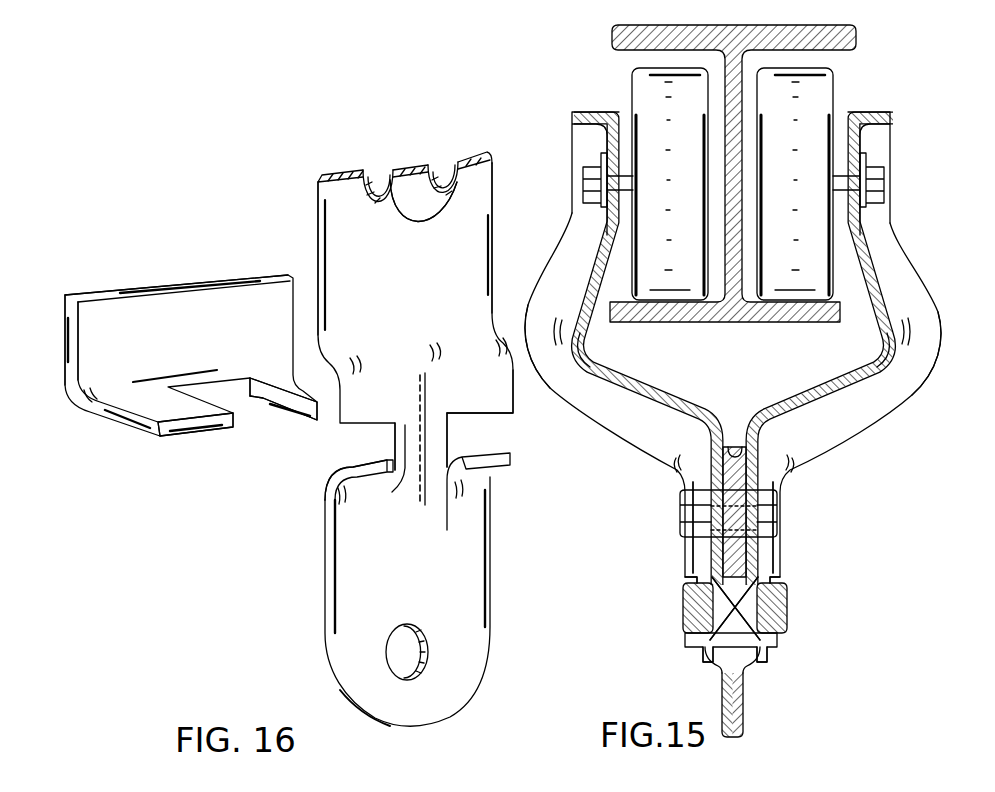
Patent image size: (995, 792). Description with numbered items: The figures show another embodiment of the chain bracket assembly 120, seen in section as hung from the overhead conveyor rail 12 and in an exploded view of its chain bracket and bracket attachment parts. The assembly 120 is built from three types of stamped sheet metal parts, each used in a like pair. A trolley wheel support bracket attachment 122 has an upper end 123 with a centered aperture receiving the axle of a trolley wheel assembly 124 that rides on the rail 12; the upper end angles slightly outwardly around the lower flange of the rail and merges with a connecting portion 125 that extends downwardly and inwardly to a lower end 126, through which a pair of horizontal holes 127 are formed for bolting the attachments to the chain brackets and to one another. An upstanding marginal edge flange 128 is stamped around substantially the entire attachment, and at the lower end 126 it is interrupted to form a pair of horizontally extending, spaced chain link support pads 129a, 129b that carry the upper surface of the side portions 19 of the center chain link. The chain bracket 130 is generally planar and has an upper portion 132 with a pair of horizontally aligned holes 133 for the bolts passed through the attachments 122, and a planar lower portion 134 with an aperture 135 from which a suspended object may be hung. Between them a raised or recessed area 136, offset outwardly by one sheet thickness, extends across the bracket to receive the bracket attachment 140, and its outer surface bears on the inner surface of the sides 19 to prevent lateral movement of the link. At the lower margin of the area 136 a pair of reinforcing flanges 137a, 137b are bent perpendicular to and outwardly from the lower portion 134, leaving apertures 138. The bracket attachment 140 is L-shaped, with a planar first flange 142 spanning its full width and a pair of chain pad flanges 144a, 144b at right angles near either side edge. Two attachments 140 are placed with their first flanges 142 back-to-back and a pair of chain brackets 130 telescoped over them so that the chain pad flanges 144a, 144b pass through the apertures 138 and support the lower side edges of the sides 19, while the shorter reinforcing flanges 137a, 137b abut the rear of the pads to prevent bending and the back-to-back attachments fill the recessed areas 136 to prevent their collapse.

In FIG. 15, the overhead conveyor rail 12 is at (816, 20).
In FIG. 15, the side portions of center chain link 19 is at (710, 612).
In FIG. 15, the chain bracket assembly 120 is at (886, 638).
In FIG. 15, the trolley wheel support bracket attachment 122 is at (603, 357).
In FIG. 15, the upper end 123 is at (610, 228).
In FIG. 15, the trolley wheel assembly 124 is at (634, 78).
In FIG. 15, the connecting portion 125 is at (650, 397).
In FIG. 15, the lower end 126 is at (712, 560).
In FIG. 15, the horizontal holes 127 is at (681, 512).
In FIG. 15, the upstanding marginal edge flange 128 is at (903, 276).
In FIG. 15, the chain link support pad 129a is at (690, 580).
In FIG. 15, the chain link support pad 129b is at (770, 582).
In FIG. 16, the chain bracket 130 is at (430, 130).
In FIG. 15, the chain bracket 130 is at (718, 540).
In FIG. 16, the upper portion 132 is at (410, 301).
In FIG. 15, the upper portion 132 is at (722, 478).
In FIG. 16, the holes 133 is at (413, 224).
In FIG. 15, the holes 133 is at (748, 513).
In FIG. 16, the lower portion 134 is at (423, 591).
In FIG. 15, the lower portion 134 is at (727, 688).
In FIG. 16, the aperture 135 is at (395, 630).
In FIG. 16, the raised or recessed area 136 is at (476, 408).
In FIG. 15, the raised or recessed area 136 is at (690, 590).
In FIG. 16, the reinforcing flange 137a is at (373, 492).
In FIG. 15, the reinforcing flange 137a is at (703, 650).
In FIG. 16, the reinforcing flange 137b is at (507, 468).
In FIG. 15, the reinforcing flange 137b is at (762, 655).
In FIG. 16, the apertures 138 is at (373, 430).
In FIG. 16, the bracket attachment 140 is at (163, 264).
In FIG. 15, the bracket attachment 140 is at (700, 625).
In FIG. 16, the first flange 142 is at (208, 346).
In FIG. 16, the chain pad flange 144a is at (172, 435).
In FIG. 15, the chain pad flange 144a is at (687, 637).
In FIG. 16, the chain pad flange 144b is at (310, 402).
In FIG. 15, the chain pad flange 144b is at (775, 640).